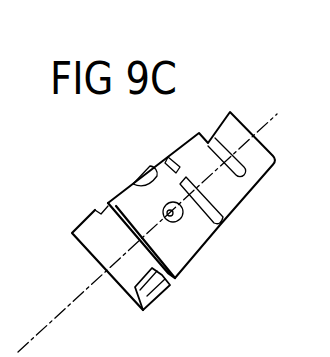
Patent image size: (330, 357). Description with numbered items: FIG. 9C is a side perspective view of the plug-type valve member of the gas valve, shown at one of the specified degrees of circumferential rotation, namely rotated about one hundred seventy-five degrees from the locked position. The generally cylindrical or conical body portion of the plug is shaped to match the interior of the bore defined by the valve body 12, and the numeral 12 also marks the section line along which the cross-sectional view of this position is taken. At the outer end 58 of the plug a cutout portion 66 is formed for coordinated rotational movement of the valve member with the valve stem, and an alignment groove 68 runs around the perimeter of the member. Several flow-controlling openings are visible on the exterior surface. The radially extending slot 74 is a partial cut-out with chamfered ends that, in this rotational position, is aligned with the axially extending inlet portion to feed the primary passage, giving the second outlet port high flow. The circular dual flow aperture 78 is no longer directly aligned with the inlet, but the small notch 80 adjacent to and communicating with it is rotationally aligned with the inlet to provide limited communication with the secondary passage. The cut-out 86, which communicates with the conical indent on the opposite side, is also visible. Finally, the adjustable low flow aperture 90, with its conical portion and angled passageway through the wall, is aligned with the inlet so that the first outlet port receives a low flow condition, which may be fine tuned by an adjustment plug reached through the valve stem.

The valve body 12 is at (277, 114).
The outer end 58 is at (93, 222).
The cutout portion 66 is at (157, 300).
The alignment groove 68 is at (107, 203).
The radially extending slot 74 is at (199, 133).
The dual flow aperture 78 is at (148, 170).
The notch 80 is at (176, 170).
The cut-out 86 is at (215, 203).
The low flow aperture 90 is at (180, 221).